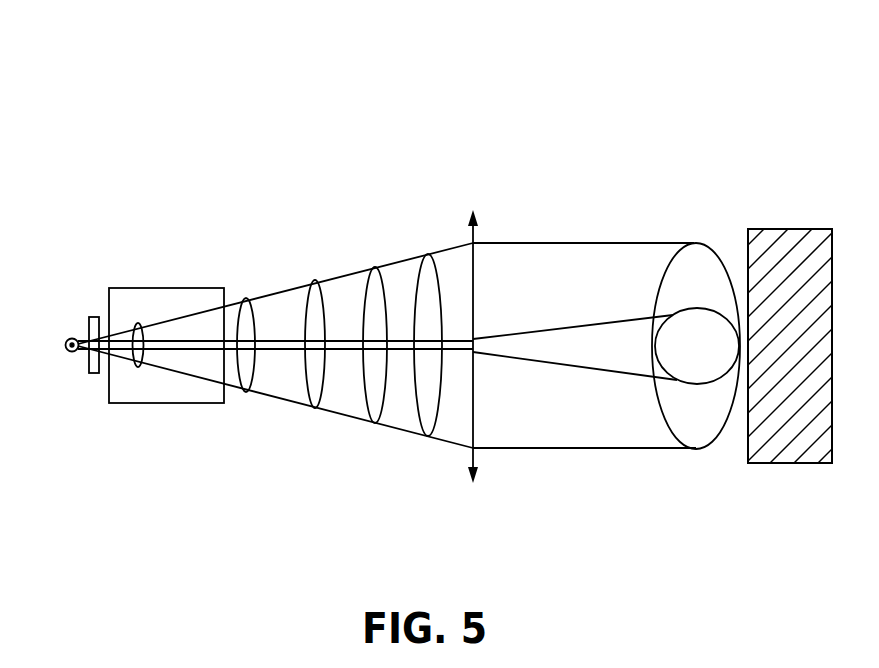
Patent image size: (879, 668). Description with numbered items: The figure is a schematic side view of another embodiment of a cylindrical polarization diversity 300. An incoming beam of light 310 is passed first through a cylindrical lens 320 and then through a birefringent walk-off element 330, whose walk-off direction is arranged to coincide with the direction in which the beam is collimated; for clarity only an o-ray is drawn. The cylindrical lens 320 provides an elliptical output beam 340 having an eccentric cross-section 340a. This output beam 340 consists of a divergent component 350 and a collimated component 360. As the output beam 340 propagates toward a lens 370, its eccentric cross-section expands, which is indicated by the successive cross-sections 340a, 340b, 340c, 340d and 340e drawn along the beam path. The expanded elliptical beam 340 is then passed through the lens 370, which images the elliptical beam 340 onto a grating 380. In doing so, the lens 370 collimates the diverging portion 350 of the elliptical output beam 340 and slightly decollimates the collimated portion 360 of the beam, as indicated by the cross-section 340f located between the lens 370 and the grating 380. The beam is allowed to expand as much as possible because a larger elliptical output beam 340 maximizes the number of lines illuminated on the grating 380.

The cylindrical polarization diversity 300 is at (255, 75).
The incoming beam of light 310 is at (78, 338).
The cylindrical lens 320 is at (92, 374).
The birefringent walk-off element 330 is at (163, 404).
The elliptical output beam 340 is at (127, 305).
The eccentric cross-section 340a is at (141, 332).
The eccentric cross-section 340b is at (254, 372).
The eccentric cross-section 340c is at (324, 392).
The eccentric cross-section 340d is at (386, 394).
The eccentric cross-section 340e is at (441, 393).
The cross-section 340f is at (715, 437).
The divergent component 350 is at (263, 297).
The collimated component 360 is at (290, 340).
The lens 370 is at (476, 458).
The grating 380 is at (802, 463).